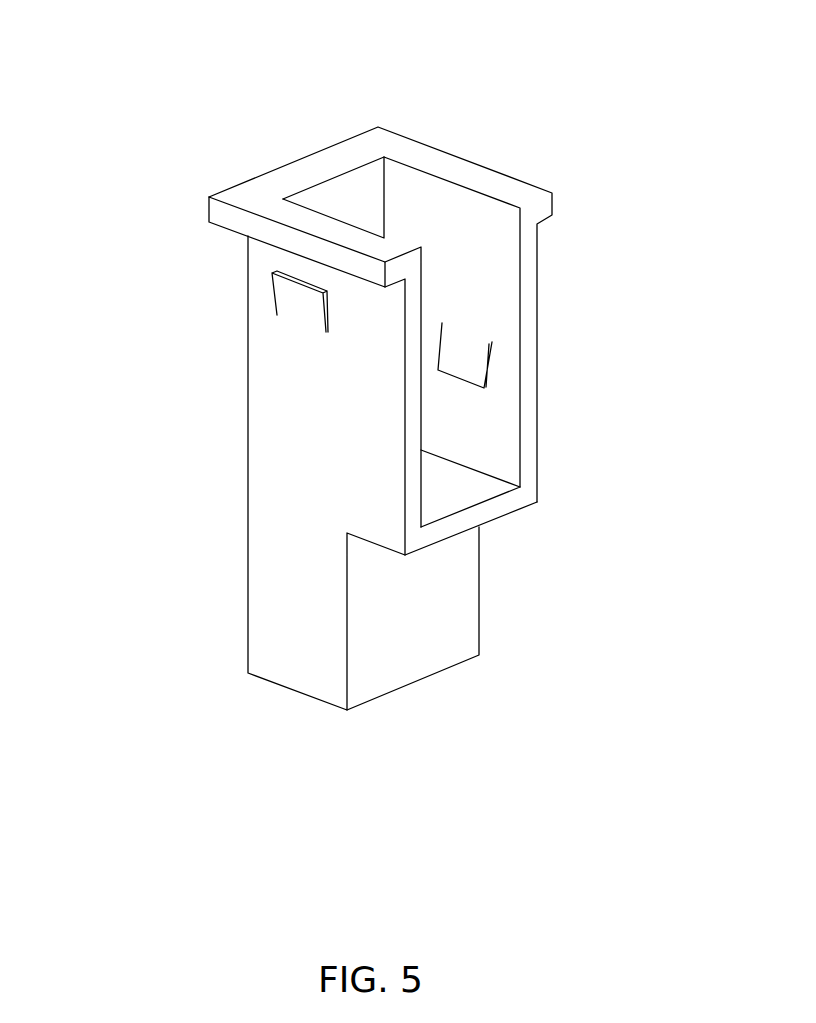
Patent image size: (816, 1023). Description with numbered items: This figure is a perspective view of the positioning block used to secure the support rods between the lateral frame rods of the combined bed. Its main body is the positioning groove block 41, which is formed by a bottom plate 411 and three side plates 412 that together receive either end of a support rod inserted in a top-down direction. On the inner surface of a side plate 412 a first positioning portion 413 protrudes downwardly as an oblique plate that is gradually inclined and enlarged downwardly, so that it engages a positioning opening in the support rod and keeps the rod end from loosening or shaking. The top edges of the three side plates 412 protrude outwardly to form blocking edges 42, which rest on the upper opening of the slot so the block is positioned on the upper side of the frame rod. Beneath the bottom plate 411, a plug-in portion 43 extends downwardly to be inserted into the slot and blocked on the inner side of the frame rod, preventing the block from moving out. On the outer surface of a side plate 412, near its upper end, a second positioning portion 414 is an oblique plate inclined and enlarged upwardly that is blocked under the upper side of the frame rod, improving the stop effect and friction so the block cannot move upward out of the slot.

The positioning groove block 41 is at (386, 462).
The blocking edges 42 is at (465, 172).
The plug-in portion 43 is at (435, 593).
The bottom plate 411 is at (498, 478).
The side plates 412 is at (503, 410).
The first positioning portion 413 is at (467, 358).
The second positioning portion 414 is at (293, 290).